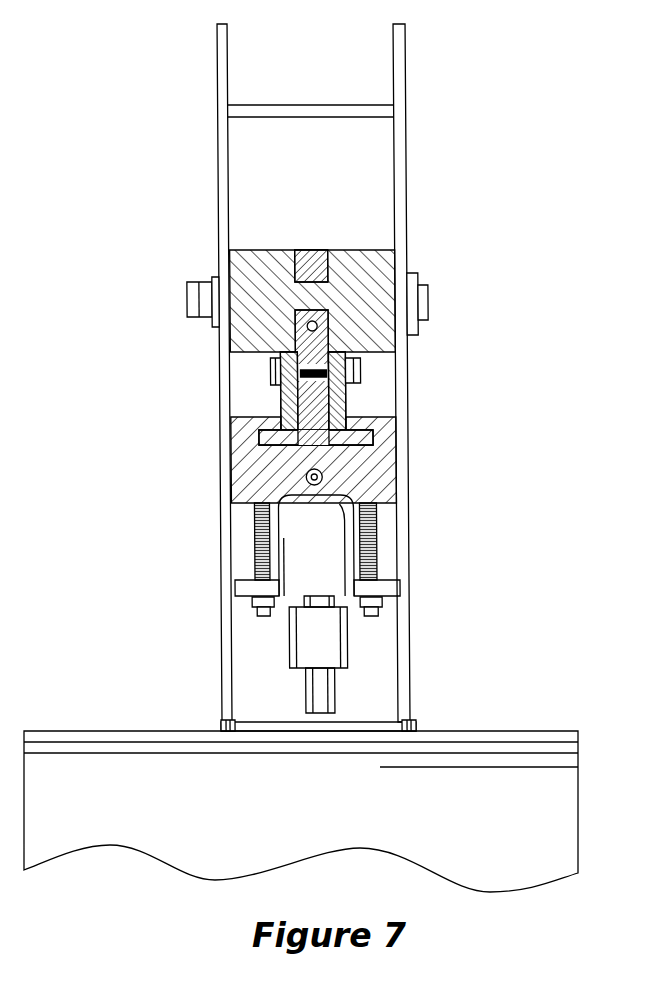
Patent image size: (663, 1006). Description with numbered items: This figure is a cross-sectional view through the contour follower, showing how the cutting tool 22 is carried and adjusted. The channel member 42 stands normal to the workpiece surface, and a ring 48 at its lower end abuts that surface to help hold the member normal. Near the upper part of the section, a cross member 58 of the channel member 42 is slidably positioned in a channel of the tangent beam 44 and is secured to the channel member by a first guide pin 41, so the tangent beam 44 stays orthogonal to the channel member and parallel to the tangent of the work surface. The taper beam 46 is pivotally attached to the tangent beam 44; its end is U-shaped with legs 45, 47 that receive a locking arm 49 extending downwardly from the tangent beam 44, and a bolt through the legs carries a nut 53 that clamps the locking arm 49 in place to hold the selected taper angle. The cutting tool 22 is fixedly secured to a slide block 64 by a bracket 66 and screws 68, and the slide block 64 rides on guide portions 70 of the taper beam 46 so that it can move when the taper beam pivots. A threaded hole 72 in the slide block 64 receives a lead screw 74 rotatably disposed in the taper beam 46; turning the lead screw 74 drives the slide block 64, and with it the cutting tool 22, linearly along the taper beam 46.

The channel member 42 is at (398, 140).
The tangent beam 44 is at (315, 252).
The cross member 58 is at (395, 263).
The first guide pin 41 is at (199, 283).
The nut 53 is at (358, 366).
The leg 45 is at (270, 372).
The taper beam 46 is at (330, 392).
The locking arm 49 is at (280, 417).
The leg 47 is at (345, 411).
The guide portions 70 is at (360, 432).
The lead screw 74 is at (306, 474).
The slide block 64 is at (385, 464).
The threaded hole 72 is at (320, 481).
The screws 68 is at (372, 562).
The bracket 66 is at (398, 590).
The cutting tool 22 is at (342, 650).
The ring 48 is at (392, 723).